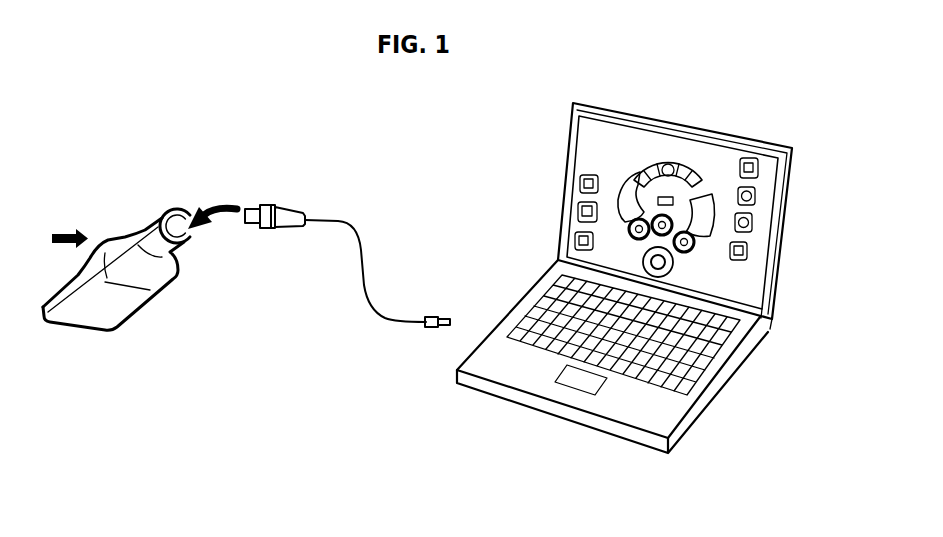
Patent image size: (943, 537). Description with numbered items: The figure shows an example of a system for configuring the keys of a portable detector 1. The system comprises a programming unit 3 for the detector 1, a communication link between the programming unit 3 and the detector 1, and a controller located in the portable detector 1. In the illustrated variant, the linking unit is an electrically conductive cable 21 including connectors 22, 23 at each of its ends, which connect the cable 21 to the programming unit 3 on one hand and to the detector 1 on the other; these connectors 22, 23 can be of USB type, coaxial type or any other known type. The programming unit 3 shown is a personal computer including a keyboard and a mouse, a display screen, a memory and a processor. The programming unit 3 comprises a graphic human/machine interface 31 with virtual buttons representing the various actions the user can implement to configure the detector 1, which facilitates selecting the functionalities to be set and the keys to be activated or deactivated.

The portable detector 1 is at (160, 315).
The electrically conductive cable 21 is at (366, 268).
The connector 22 is at (287, 199).
The connector 23 is at (439, 314).
The programming unit 3 is at (624, 278).
The human/machine interface 31 is at (598, 158).